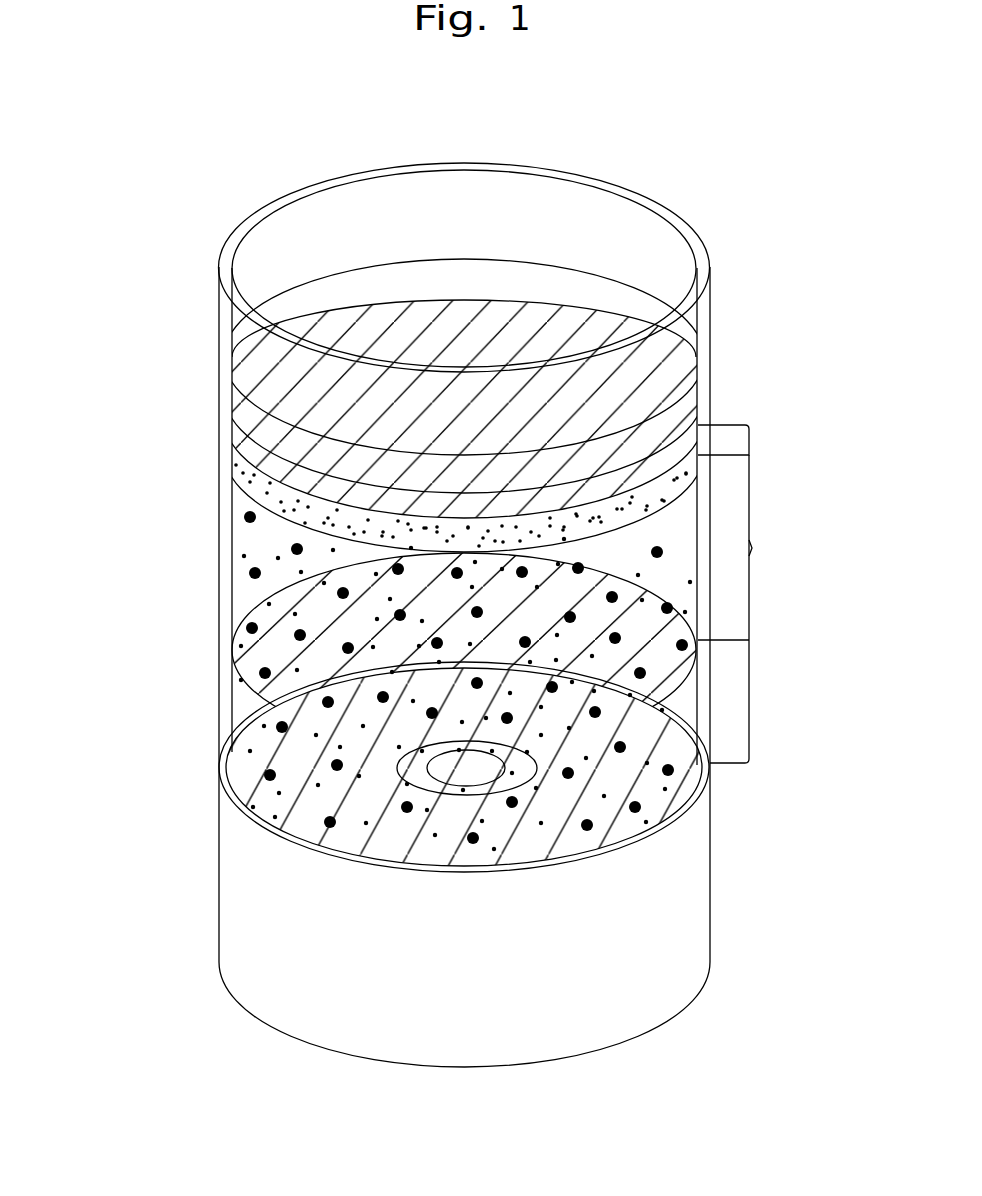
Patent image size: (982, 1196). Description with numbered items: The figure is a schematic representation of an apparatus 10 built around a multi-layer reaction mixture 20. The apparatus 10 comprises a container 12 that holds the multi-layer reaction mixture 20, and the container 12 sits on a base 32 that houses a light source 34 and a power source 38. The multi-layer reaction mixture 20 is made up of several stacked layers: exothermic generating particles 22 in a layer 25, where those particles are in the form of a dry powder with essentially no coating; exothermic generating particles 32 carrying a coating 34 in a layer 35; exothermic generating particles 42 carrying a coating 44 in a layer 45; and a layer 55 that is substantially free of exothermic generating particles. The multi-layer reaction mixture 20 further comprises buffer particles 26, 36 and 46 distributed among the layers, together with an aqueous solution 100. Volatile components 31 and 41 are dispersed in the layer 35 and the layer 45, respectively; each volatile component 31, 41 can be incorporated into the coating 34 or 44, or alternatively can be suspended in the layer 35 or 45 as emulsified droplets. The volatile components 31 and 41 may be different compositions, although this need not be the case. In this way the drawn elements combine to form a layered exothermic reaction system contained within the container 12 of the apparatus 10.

The apparatus 10 is at (744, 247).
The container 12 is at (703, 325).
The aqueous solution 100 is at (243, 408).
The buffer particles 26 is at (236, 460).
The exothermic generating particles 22 is at (247, 483).
The multi-layer reaction mixture 20 is at (678, 535).
The volatile component 41 is at (685, 630).
The layer 35 is at (748, 706).
The coating 34 is at (417, 780).
The power source 38 is at (397, 770).
The exothermic generating particles 42 is at (255, 573).
The coating 44 is at (250, 628).
The buffer particles 46 is at (262, 550).
The buffer particles 36 is at (243, 704).
The exothermic generating particles 32 is at (250, 933).
The volatile component 31 is at (660, 797).
The layer 55 is at (748, 432).
The layer 25 is at (748, 458).
The layer 45 is at (748, 550).